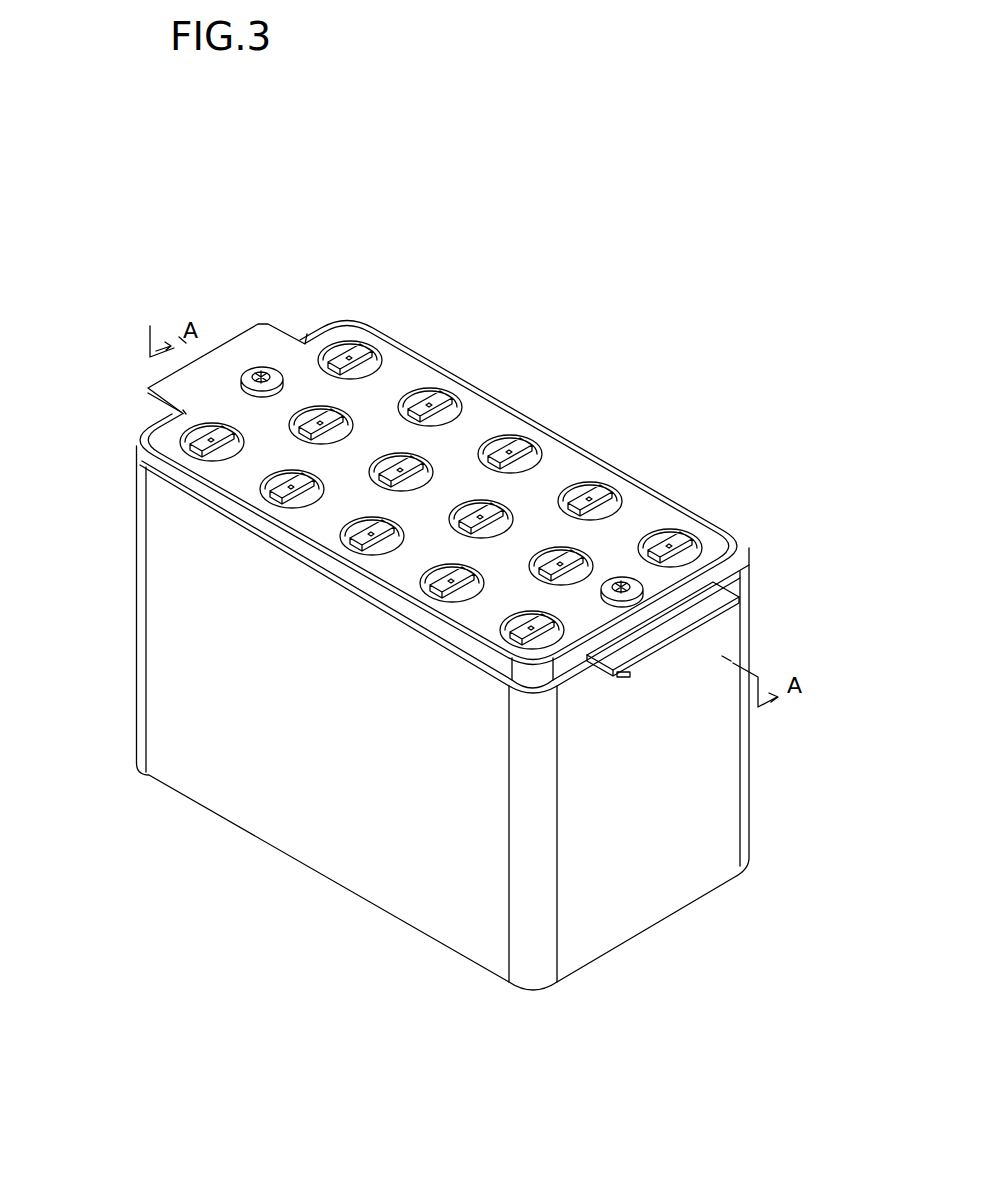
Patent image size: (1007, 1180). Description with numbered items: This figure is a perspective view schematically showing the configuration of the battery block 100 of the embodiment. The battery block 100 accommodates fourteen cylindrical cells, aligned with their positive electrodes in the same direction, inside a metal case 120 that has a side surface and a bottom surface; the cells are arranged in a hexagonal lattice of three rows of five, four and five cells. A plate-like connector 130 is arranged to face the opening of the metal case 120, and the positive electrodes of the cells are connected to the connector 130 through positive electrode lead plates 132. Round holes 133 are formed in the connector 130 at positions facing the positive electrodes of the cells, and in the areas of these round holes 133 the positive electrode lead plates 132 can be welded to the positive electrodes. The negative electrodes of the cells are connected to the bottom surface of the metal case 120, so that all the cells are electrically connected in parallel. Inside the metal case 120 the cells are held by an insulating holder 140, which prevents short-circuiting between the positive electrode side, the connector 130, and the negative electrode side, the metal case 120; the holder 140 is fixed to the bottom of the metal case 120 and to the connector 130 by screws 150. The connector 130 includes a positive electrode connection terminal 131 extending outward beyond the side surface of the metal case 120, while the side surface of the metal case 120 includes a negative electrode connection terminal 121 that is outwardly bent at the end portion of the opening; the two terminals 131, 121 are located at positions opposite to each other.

The battery block 100 is at (323, 162).
The metal case 120 is at (680, 848).
The negative electrode connection terminal 121 is at (710, 607).
The connector 130 is at (388, 384).
The positive electrode connection terminal 131 is at (236, 352).
The positive electrode lead plate 132 is at (502, 452).
The round hole 133 is at (606, 494).
The holder 140 is at (140, 452).
The screw 150 is at (293, 372).